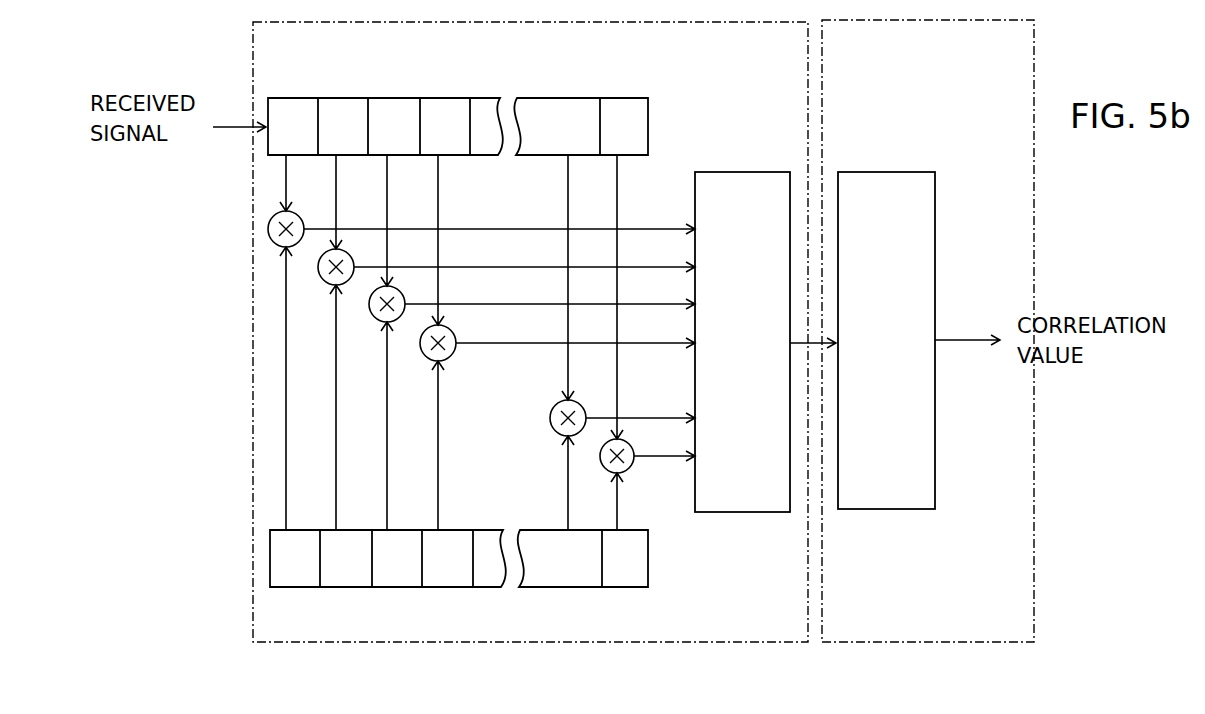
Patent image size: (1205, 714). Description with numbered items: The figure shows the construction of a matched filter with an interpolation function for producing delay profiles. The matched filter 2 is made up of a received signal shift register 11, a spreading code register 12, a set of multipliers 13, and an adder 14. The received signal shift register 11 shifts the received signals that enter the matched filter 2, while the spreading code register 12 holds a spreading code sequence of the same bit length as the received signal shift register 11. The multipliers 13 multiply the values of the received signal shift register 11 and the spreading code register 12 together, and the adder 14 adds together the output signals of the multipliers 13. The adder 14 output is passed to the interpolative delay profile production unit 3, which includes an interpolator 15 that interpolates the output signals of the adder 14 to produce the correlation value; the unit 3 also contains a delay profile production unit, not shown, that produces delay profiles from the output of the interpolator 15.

The matched filter 2 is at (253, 560).
The interpolative delay profile production unit 3 is at (1035, 601).
The received signal shift register 11 is at (581, 98).
The spreading code register 12 is at (650, 565).
The multipliers 13 is at (296, 214).
The adder 14 is at (715, 172).
The interpolator 15 is at (860, 172).